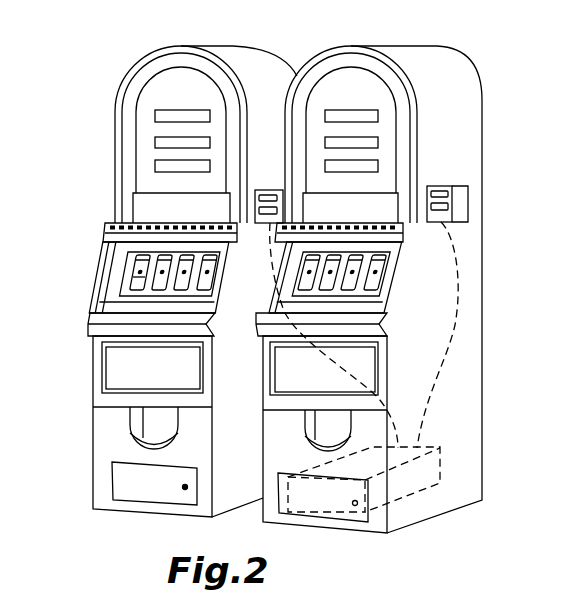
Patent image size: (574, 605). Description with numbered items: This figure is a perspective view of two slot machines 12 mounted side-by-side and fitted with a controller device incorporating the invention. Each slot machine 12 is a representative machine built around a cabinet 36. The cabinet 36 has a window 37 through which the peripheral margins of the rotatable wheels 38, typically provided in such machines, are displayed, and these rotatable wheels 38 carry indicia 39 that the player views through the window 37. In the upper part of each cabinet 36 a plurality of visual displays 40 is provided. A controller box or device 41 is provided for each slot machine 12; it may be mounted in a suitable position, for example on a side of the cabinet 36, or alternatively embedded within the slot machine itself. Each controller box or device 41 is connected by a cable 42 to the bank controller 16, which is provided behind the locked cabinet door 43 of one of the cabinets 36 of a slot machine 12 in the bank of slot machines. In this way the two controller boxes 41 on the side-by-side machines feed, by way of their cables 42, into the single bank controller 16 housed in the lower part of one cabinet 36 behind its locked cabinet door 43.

The slot machine 12 is at (140, 62).
The bank controller 16 is at (395, 508).
The cabinet 36 is at (93, 400).
The window 37 is at (130, 288).
The rotatable wheels 38 is at (138, 258).
The indicia 39 is at (133, 277).
The visual displays 40 is at (161, 161).
The controller box or device 41 is at (268, 189).
The cable 42 is at (349, 335).
The locked cabinet door 43 is at (128, 466).